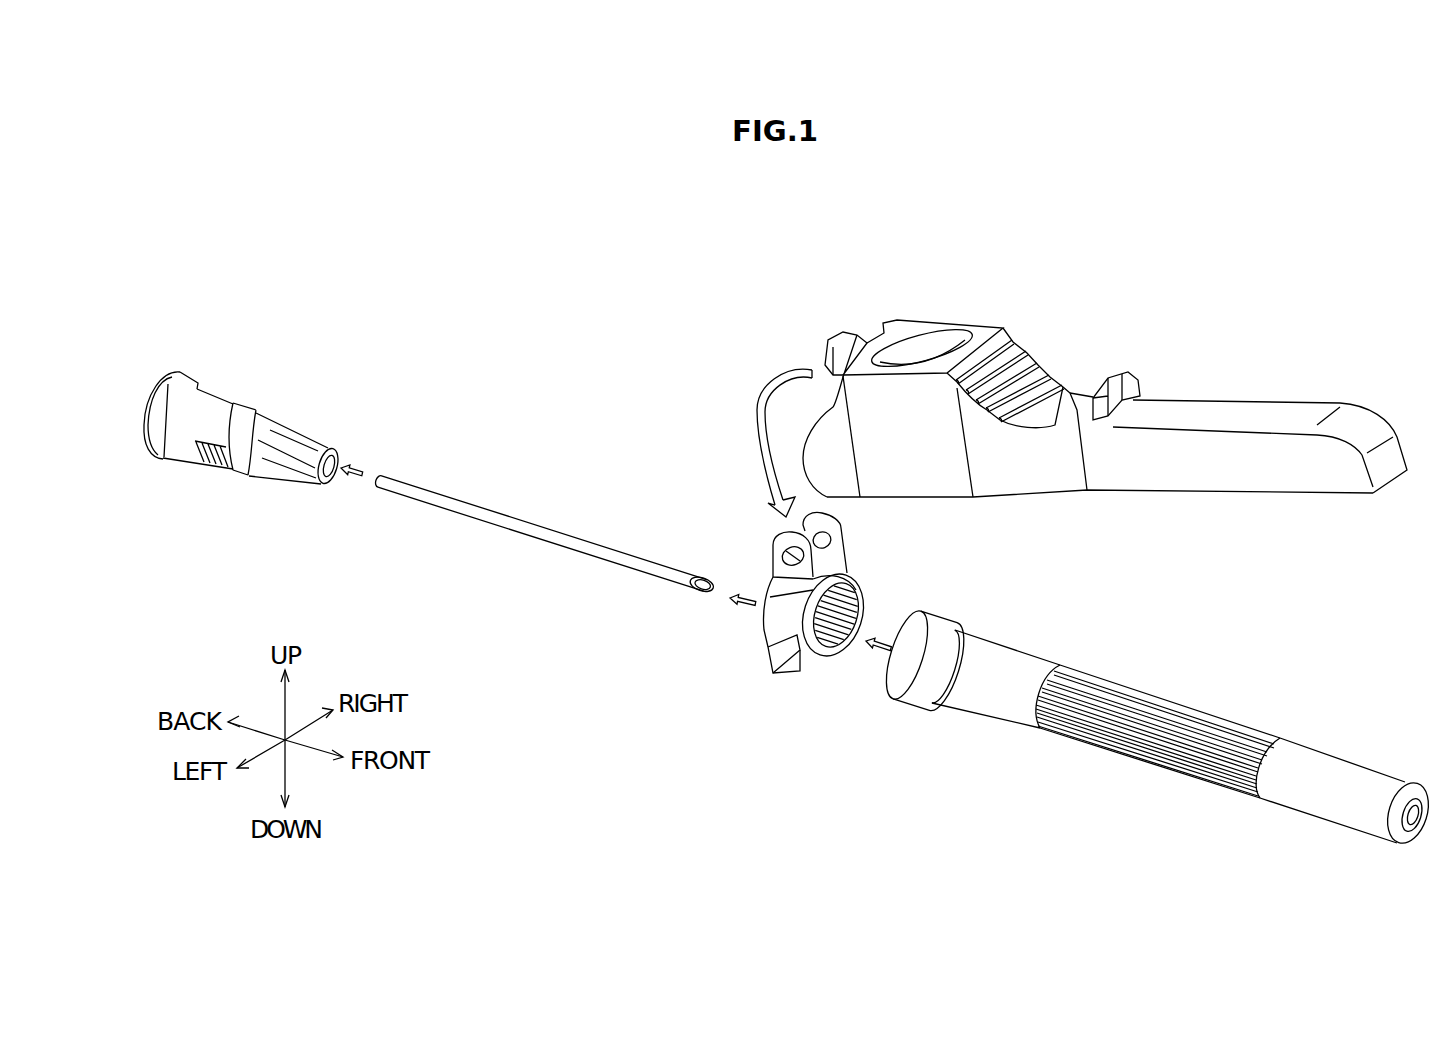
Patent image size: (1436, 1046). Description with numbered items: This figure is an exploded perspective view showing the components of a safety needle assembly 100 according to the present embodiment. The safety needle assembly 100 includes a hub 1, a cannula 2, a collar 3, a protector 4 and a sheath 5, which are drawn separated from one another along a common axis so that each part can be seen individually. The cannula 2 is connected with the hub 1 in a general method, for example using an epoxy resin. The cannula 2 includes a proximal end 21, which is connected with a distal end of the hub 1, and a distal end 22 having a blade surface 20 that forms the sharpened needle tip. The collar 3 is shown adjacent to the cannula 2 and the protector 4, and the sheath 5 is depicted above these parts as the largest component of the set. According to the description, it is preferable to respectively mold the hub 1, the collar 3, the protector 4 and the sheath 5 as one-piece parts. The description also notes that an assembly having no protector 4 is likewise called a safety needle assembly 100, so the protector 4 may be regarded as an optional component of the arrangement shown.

The safety needle assembly 100 is at (553, 275).
The hub 1 is at (262, 388).
The cannula 2 is at (575, 567).
The proximal end 21 is at (405, 478).
The blade surface 20 is at (700, 578).
The distal end 22 is at (706, 596).
The collar 3 is at (749, 663).
The protector 4 is at (988, 750).
The sheath 5 is at (1135, 348).